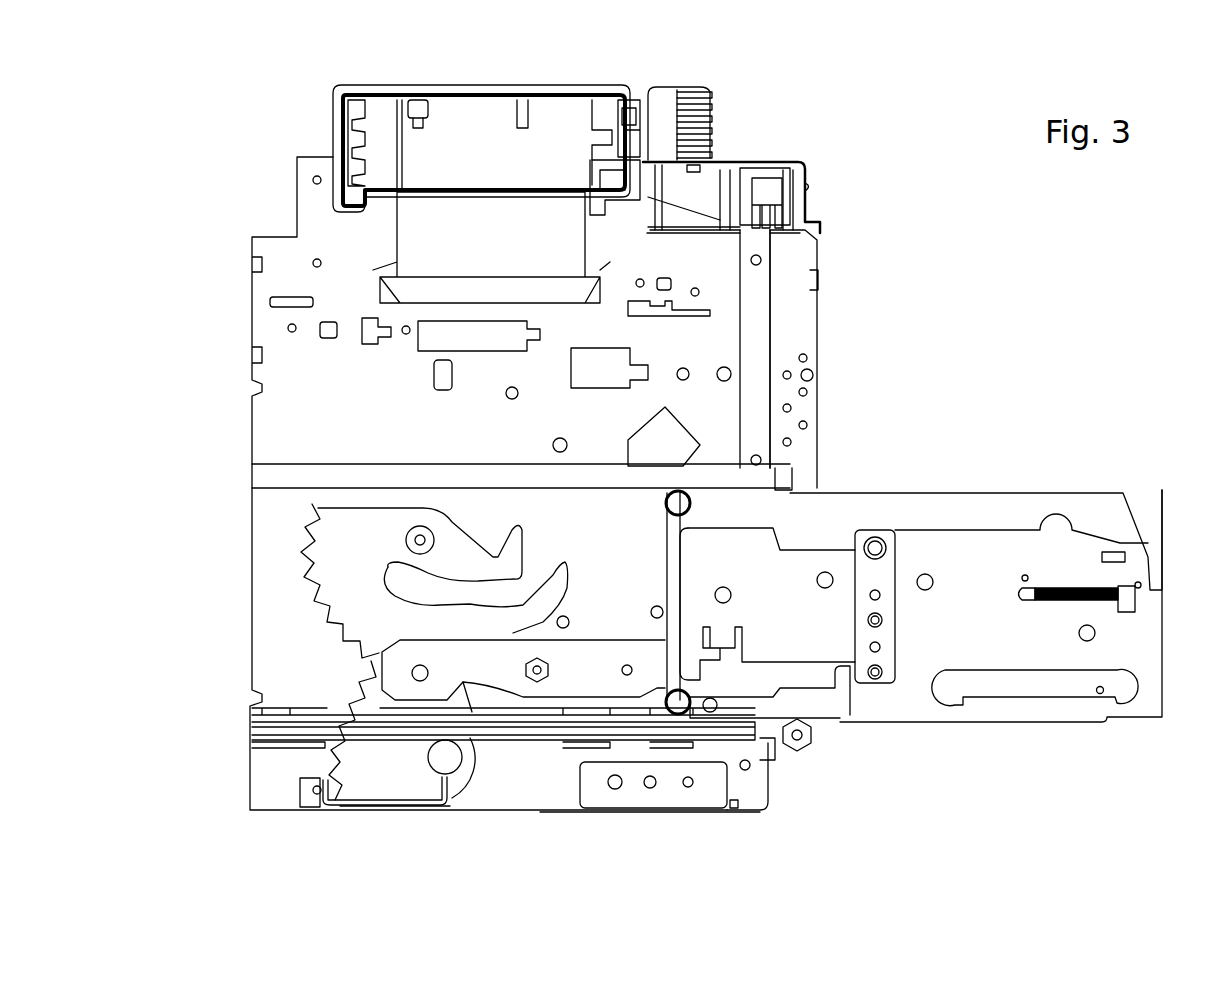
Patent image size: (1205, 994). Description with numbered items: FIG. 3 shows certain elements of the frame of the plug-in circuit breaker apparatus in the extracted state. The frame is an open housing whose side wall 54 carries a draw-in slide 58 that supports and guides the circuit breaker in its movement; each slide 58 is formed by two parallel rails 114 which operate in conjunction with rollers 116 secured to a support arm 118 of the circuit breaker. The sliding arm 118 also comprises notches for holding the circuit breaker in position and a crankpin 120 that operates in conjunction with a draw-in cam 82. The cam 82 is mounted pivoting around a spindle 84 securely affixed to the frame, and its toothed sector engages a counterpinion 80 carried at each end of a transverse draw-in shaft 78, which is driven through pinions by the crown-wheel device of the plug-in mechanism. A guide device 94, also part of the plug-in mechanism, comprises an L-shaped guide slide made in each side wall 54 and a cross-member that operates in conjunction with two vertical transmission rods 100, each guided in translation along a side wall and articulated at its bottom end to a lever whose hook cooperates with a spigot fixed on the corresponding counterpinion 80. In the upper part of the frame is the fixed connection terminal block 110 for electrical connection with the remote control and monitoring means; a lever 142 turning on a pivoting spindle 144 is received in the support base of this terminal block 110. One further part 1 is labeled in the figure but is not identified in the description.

The frame edge 1 is at (1162, 490).
The side wall 54 is at (317, 238).
The draw-in slide 58 is at (340, 418).
The transverse draw-in shaft 78 is at (448, 760).
The counterpinion 80 is at (385, 770).
The draw-in cam 82 is at (355, 570).
The spindle 84 is at (406, 540).
The guide device 94 is at (788, 332).
The vertical transmission rod 100 is at (757, 280).
The fixed connection terminal block 110 is at (730, 120).
The parallel rail 114 is at (300, 473).
The roller 116 is at (677, 510).
The support arm 118 is at (980, 583).
The crankpin 120 is at (876, 548).
The lever 142 is at (625, 100).
The pivoting spindle 144 is at (637, 180).